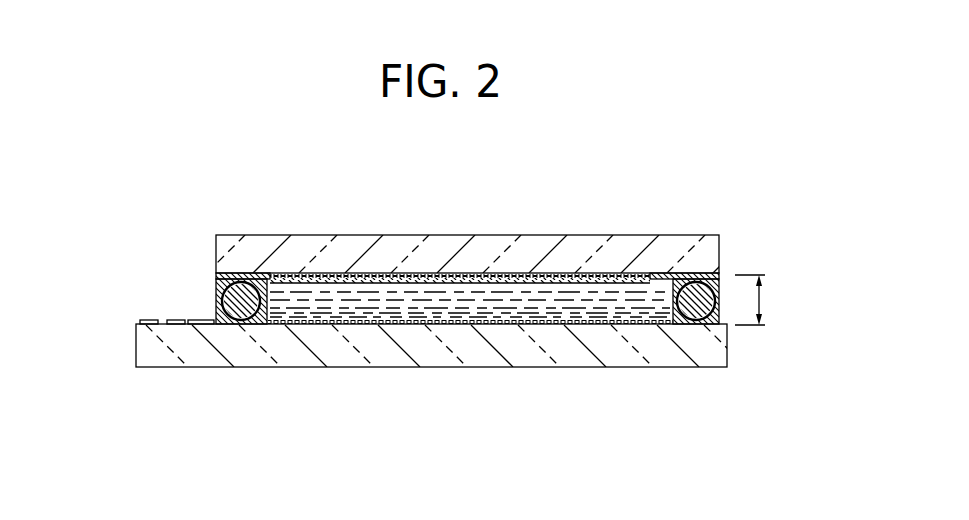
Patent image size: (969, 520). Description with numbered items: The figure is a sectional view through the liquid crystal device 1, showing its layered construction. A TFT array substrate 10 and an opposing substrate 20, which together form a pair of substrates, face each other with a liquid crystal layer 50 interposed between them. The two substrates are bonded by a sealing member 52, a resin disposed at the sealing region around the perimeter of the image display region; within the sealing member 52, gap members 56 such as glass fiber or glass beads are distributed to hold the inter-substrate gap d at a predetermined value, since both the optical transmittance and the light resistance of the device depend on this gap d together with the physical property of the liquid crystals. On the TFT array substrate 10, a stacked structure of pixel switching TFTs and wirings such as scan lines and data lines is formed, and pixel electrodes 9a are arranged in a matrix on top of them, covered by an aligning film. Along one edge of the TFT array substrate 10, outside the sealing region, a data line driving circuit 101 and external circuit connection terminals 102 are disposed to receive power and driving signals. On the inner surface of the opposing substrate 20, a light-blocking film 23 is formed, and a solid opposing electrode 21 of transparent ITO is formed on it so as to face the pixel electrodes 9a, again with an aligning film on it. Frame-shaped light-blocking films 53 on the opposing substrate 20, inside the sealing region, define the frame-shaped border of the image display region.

The liquid crystal device 1 is at (547, 190).
The TFT array substrate 10 is at (497, 357).
The pixel electrodes 9a is at (316, 326).
The opposing substrate 20 is at (378, 236).
The opposing electrode 21 is at (597, 276).
The light-blocking film 23 is at (457, 290).
The liquid crystal layer 50 is at (412, 308).
The sealing member 52 is at (217, 306).
The frame-shaped light-blocking films 53 is at (269, 277).
The gap members 56 is at (244, 318).
The data line driving circuit 101 is at (190, 321).
The external circuit connection terminals 102 is at (148, 322).
The inter-substrate gap d is at (760, 300).